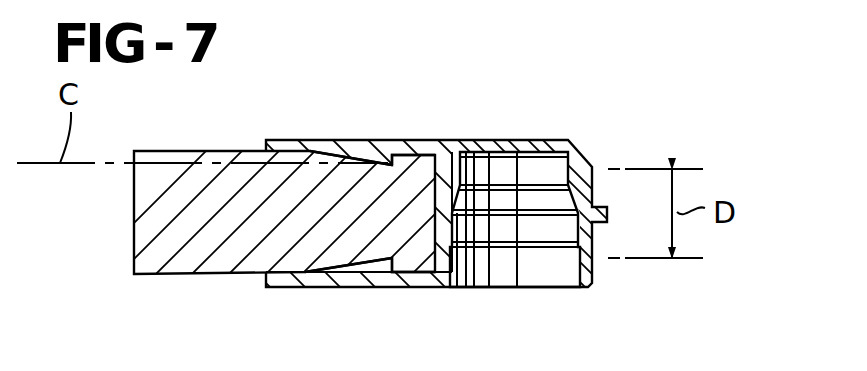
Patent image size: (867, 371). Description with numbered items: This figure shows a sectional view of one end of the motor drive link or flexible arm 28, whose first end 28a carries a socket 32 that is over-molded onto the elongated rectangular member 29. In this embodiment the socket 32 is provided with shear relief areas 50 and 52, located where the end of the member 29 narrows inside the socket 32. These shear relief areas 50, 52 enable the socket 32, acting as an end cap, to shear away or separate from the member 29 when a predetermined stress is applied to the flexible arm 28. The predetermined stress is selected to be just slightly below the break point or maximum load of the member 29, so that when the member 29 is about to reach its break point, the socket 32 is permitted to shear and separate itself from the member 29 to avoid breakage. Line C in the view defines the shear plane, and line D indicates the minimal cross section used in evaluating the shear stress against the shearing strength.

The flexible arm 28 is at (204, 143).
The first end 28a is at (371, 176).
The elongated rectangular member 29 is at (192, 243).
The socket 32 is at (533, 152).
The shear relief area 50 is at (388, 163).
The shear relief area 52 is at (395, 262).